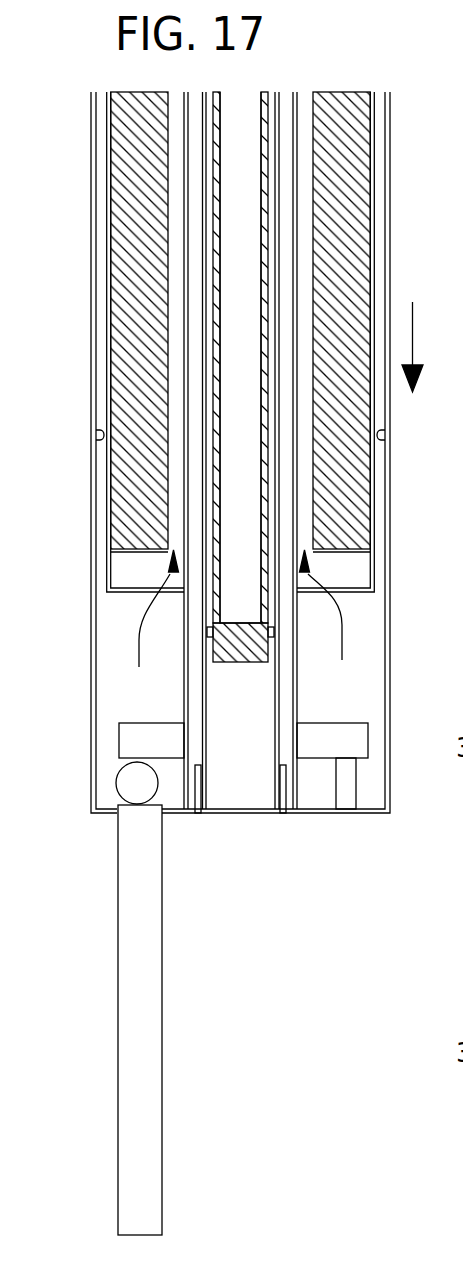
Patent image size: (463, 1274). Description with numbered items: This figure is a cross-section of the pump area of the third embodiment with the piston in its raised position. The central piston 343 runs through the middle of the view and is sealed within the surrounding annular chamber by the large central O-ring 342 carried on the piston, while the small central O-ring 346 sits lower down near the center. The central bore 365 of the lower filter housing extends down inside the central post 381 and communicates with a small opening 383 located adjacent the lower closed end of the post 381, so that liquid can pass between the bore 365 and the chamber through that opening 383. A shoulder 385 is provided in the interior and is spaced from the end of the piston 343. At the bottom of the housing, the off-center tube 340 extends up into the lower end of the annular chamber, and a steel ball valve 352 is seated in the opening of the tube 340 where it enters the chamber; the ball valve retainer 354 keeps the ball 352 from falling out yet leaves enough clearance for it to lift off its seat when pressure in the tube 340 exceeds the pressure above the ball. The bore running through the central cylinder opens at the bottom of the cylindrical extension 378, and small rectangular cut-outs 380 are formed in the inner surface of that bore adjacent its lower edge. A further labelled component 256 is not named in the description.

The tube 256 is at (288, 678).
The off-center tube 340 is at (120, 1043).
The large central O-ring 342 is at (95, 437).
The central piston 343 is at (104, 594).
The small central O-ring 346 is at (274, 632).
The steel ball valve 352 is at (127, 787).
The ball valve retainer 354 is at (128, 740).
The central bore 365 is at (232, 243).
The cylindrical extension 378 is at (390, 769).
The small rectangular cut-outs 380 is at (279, 813).
The central post 381 is at (198, 335).
The small opening 383 is at (215, 593).
The shoulder 385 is at (337, 550).